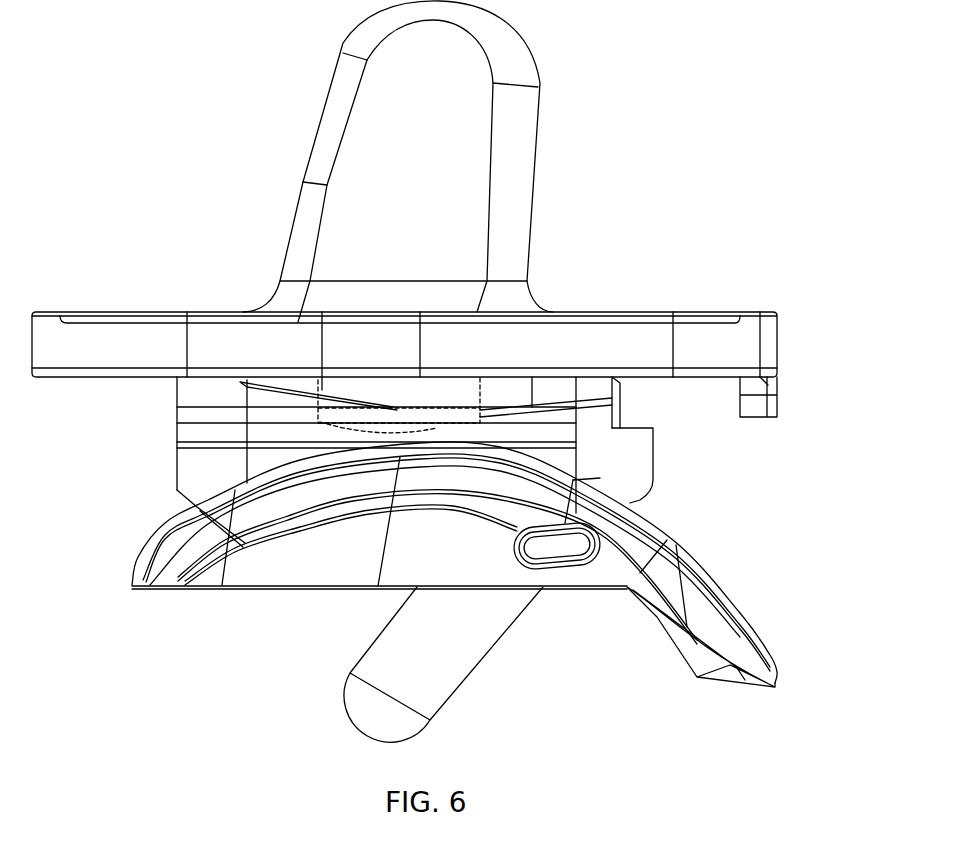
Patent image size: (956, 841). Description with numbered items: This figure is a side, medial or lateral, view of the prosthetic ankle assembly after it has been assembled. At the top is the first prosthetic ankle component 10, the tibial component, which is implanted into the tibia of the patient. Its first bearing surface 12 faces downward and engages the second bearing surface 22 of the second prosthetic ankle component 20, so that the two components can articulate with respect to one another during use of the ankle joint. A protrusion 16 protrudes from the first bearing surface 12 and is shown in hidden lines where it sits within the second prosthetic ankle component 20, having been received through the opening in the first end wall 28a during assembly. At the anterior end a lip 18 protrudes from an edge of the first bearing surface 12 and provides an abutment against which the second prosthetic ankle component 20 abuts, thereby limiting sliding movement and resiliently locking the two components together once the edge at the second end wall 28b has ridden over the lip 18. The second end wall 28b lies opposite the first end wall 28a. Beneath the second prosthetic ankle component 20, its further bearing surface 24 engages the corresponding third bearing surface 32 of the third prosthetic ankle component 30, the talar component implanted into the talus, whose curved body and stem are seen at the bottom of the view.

The first prosthetic ankle component 10 is at (462, 172).
The first bearing surface 12 is at (157, 373).
The protrusion 16 is at (347, 390).
The lip 18 is at (753, 403).
The second prosthetic ankle component 20 is at (625, 467).
The second bearing surface 22 is at (207, 377).
The further bearing surface 24 is at (617, 493).
The first end wall 28a is at (175, 465).
The second end wall 28b is at (620, 402).
The third prosthetic ankle component 30 is at (733, 625).
The third bearing surface 32 is at (627, 590).